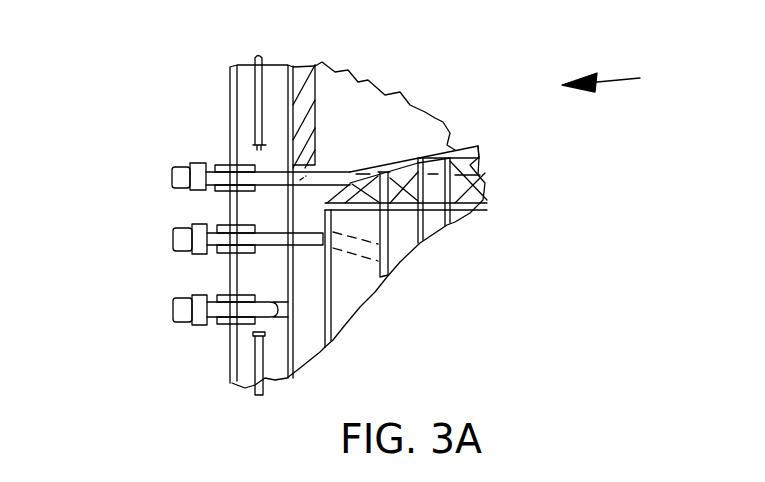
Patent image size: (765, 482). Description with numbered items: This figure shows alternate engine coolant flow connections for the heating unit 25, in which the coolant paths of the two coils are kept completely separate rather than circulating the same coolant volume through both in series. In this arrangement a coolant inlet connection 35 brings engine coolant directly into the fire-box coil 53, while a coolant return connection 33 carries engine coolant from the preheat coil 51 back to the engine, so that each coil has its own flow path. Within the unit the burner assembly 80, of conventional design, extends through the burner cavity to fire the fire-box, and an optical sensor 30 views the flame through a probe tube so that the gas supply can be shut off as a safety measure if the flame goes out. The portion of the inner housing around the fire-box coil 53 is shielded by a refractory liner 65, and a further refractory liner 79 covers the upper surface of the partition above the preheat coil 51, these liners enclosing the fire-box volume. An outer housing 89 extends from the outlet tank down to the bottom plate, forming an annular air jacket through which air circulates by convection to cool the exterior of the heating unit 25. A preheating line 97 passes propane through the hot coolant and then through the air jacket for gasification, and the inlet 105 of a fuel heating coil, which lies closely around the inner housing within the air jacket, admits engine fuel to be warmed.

The optical sensor 30 is at (392, 238).
The coolant return connection 33 is at (173, 227).
The coolant inlet connection 35 is at (177, 165).
The preheat coil 51 is at (330, 270).
The fire-box coil 53 is at (367, 168).
The refractory liner 65 is at (303, 168).
The refractory liner 79 is at (480, 175).
The burner assembly 80 is at (443, 147).
The outer housing 89 is at (230, 130).
The preheating line 97 is at (258, 102).
The inlet 105 is at (173, 302).
The heating unit 25 is at (637, 79).